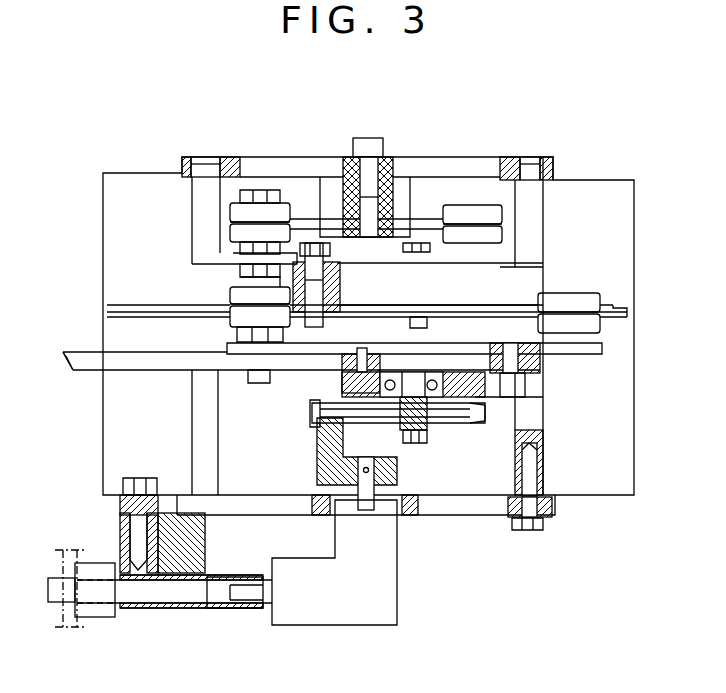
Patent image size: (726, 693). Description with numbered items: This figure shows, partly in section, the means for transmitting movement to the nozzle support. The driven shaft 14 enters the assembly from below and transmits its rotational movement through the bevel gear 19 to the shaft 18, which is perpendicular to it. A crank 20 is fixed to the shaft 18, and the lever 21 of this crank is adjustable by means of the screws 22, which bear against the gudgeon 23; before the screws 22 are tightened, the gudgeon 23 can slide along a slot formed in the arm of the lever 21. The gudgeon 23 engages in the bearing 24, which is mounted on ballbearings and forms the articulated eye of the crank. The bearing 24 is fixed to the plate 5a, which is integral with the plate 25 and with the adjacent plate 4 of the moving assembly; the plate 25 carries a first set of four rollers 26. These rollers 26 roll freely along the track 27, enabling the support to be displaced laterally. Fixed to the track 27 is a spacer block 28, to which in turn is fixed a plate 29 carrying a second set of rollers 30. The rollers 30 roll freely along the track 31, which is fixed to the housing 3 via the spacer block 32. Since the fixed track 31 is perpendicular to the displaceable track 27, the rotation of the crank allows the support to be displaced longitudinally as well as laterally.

The housing 3 is at (103, 250).
The slide plate 4 is at (100, 348).
The plate 5a is at (73, 363).
The shaft 14 is at (243, 595).
The shaft 18 is at (358, 500).
The bevel gear 19 is at (332, 598).
The crank 20 is at (320, 462).
The lever 21 is at (385, 423).
The screws 22 is at (310, 415).
The gudgeon 23 is at (320, 390).
The bearing 24 is at (500, 397).
The plate 25 is at (227, 347).
The rollers 26 is at (230, 297).
The track 27 is at (613, 307).
The spacer block 28 is at (523, 282).
The plate 29 is at (230, 260).
The rollers 30 is at (252, 212).
The track 31 is at (315, 225).
The spacer block 32 is at (402, 192).